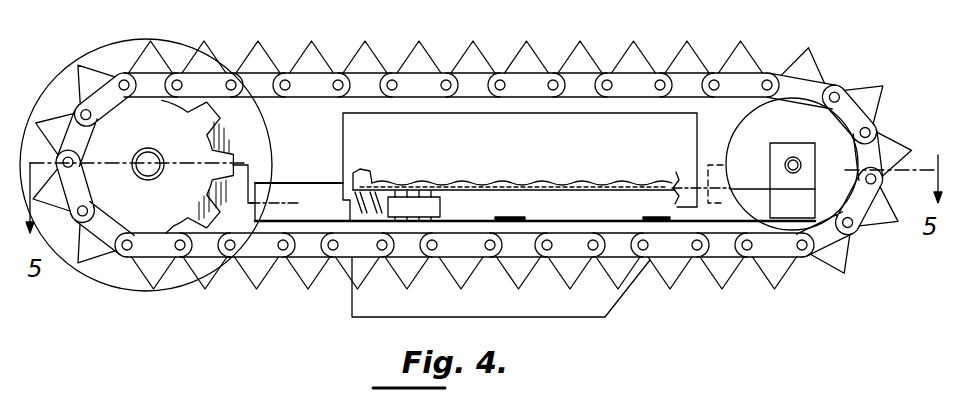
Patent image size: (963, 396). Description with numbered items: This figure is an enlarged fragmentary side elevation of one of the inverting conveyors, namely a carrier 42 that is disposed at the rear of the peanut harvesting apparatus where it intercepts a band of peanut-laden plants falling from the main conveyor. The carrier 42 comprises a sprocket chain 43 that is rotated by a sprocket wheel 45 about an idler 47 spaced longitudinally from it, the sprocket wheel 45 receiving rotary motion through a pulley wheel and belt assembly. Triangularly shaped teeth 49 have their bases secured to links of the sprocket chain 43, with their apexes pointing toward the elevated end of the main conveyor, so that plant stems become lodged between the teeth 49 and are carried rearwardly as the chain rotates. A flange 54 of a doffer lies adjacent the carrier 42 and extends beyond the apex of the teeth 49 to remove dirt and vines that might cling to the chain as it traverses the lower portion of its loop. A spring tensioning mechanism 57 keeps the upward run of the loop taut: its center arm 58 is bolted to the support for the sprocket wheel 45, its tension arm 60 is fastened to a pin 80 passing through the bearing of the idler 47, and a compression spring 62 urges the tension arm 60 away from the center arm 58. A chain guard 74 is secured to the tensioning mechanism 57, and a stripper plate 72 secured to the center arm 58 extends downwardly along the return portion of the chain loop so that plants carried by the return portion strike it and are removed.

The carrier 42 is at (825, 79).
The sprocket chain 43 is at (678, 252).
The sprocket wheel 45 is at (137, 213).
The idler 47 is at (878, 172).
The triangularly shaped teeth 49 is at (318, 57).
The flange 54 is at (116, 272).
The spring tensioning mechanism 57 is at (727, 221).
The center arm 58 is at (302, 195).
The tension arm 60 is at (762, 197).
The compression spring 62 is at (376, 176).
The stripper plate 72 is at (592, 318).
The chain guard 74 is at (695, 118).
The pin 80 is at (793, 157).